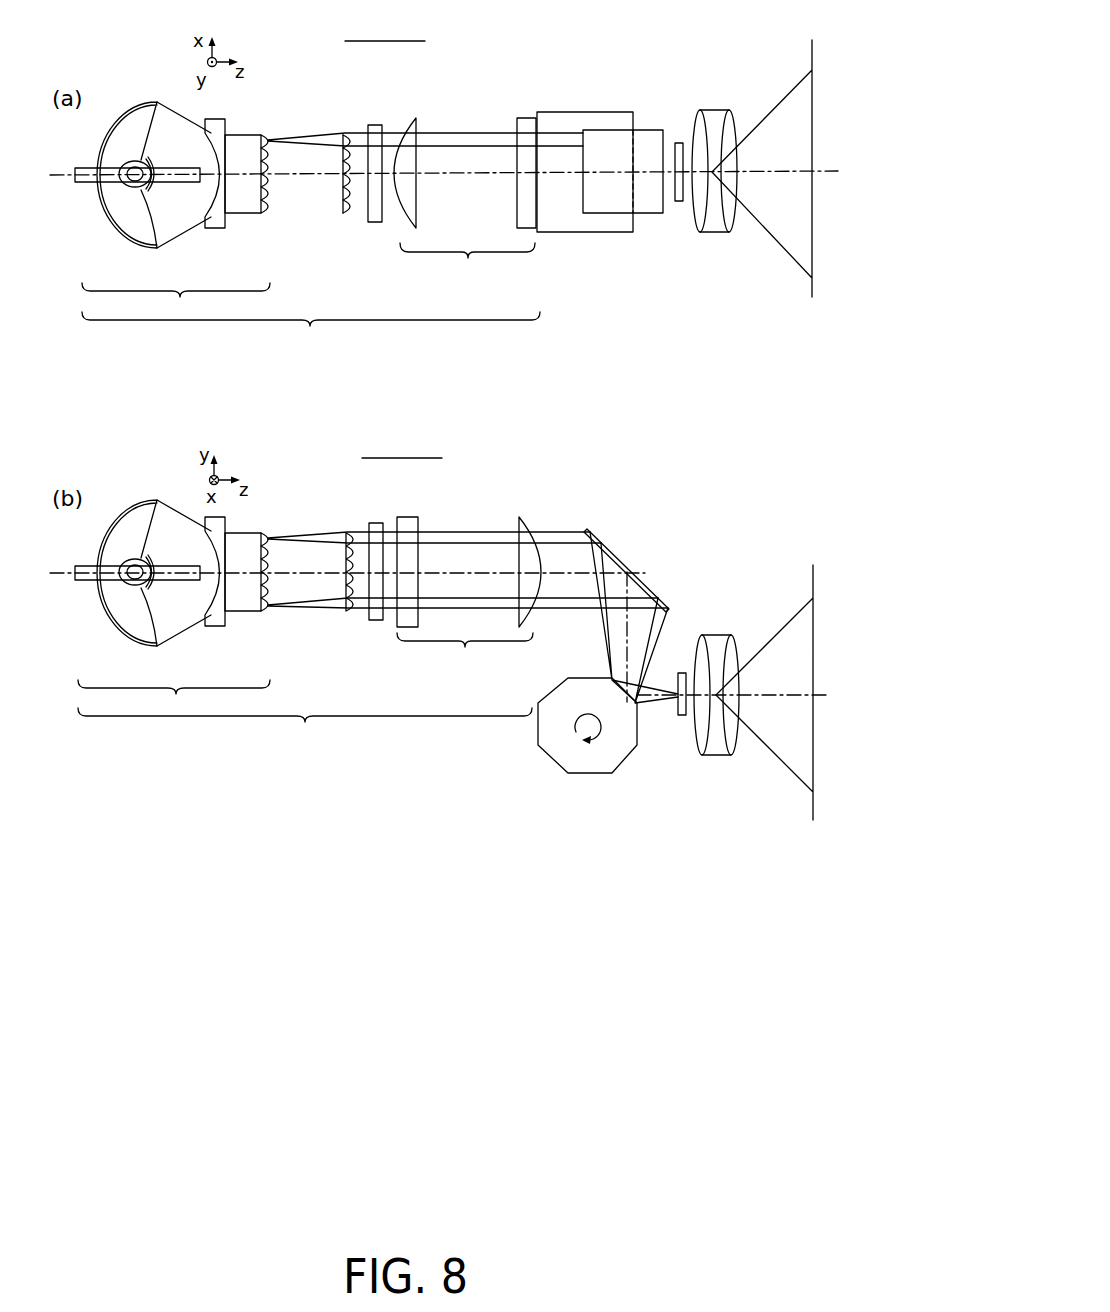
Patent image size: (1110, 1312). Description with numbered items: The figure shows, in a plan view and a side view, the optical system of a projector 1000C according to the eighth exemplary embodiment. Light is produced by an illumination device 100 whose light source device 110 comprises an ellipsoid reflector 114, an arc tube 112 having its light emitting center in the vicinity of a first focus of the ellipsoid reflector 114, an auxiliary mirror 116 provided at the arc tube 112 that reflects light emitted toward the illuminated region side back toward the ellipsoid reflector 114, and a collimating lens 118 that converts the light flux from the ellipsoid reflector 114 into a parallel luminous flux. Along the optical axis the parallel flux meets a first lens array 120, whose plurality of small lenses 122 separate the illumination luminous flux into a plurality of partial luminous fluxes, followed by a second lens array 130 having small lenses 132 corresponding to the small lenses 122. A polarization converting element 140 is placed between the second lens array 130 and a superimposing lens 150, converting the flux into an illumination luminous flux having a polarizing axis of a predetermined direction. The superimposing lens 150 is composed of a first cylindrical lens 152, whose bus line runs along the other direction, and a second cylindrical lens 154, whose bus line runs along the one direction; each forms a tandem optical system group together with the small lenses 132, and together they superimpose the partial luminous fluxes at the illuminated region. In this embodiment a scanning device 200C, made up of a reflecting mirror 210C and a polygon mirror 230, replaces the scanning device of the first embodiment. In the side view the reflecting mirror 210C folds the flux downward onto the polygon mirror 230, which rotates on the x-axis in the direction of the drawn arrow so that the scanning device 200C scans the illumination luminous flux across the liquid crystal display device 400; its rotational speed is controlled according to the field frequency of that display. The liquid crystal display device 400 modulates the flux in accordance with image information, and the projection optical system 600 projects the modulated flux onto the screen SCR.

The projector 1000C is at (393, 238).
The illumination device 100 is at (309, 530).
The light source device 110 is at (174, 497).
The arc tube 112 is at (151, 193).
The ellipsoid reflector 114 is at (123, 232).
The auxiliary mirror 116 is at (190, 232).
The collimating lens 118 is at (222, 229).
The first lens array 120 is at (262, 215).
The small lenses 122 is at (262, 136).
The second lens array 130 is at (348, 215).
The small lenses 132 is at (346, 134).
The polarization converting element 140 is at (376, 222).
The superimposing lens 150 is at (466, 458).
The first cylindrical lens 152 is at (413, 118).
The second cylindrical lens 154 is at (522, 118).
The scanning device 200C is at (599, 100).
The reflecting mirror 210C is at (648, 213).
The polygon mirror 230 is at (583, 232).
The liquid crystal display device 400 is at (675, 143).
The projection optical system 600 is at (720, 111).
The screen SCR is at (810, 277).